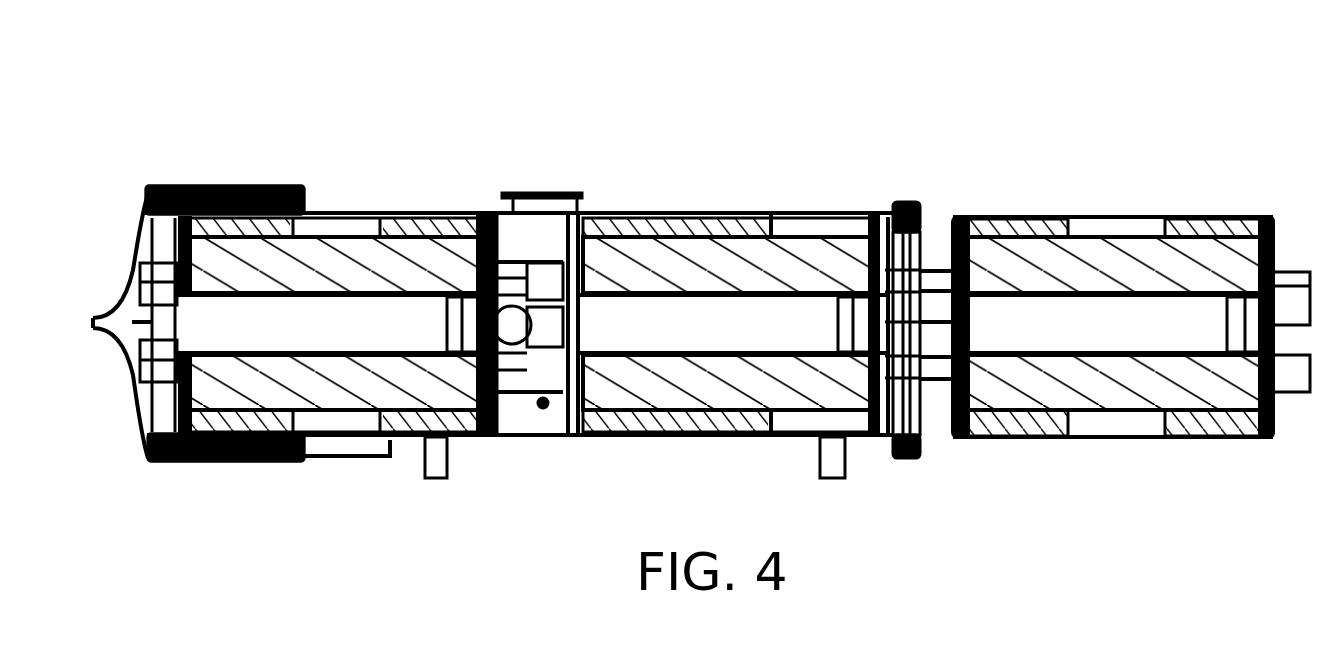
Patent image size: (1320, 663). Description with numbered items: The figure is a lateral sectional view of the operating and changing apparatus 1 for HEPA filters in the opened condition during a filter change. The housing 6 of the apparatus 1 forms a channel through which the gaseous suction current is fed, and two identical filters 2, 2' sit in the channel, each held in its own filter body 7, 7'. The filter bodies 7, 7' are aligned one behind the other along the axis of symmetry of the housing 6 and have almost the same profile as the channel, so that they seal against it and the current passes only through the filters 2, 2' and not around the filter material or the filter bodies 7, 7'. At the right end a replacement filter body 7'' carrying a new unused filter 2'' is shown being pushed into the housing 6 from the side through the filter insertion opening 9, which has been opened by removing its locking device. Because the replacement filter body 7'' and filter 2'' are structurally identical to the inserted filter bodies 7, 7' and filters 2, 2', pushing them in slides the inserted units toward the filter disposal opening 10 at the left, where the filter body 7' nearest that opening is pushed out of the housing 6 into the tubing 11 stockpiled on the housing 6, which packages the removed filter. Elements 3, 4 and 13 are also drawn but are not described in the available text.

The operating and changing apparatus 1 is at (902, 128).
The filter 2 is at (733, 362).
The filter 2' is at (334, 280).
The new unused HEPA filter 2'' is at (1131, 365).
The bottom cap 3 is at (332, 447).
The valve block with port 4 is at (550, 209).
The housing 6 is at (756, 205).
The filter body 7 is at (726, 366).
The filter body 7' is at (339, 378).
The replacement filter body 7'' is at (1113, 362).
The filter insertion opening 9 is at (926, 230).
The filter disposal opening 10 is at (168, 240).
The tubing 11 is at (137, 452).
The seal ring 13 is at (247, 186).